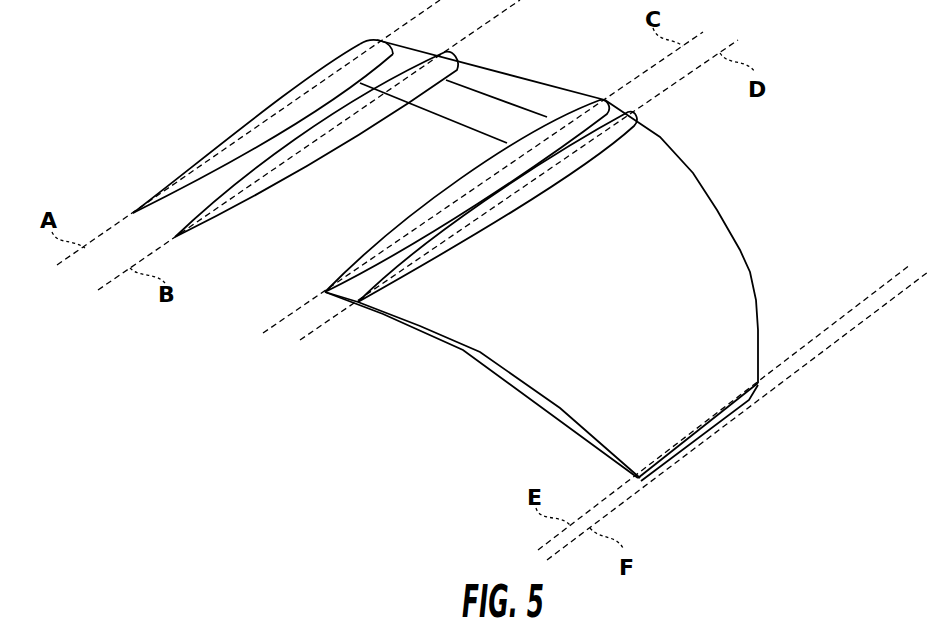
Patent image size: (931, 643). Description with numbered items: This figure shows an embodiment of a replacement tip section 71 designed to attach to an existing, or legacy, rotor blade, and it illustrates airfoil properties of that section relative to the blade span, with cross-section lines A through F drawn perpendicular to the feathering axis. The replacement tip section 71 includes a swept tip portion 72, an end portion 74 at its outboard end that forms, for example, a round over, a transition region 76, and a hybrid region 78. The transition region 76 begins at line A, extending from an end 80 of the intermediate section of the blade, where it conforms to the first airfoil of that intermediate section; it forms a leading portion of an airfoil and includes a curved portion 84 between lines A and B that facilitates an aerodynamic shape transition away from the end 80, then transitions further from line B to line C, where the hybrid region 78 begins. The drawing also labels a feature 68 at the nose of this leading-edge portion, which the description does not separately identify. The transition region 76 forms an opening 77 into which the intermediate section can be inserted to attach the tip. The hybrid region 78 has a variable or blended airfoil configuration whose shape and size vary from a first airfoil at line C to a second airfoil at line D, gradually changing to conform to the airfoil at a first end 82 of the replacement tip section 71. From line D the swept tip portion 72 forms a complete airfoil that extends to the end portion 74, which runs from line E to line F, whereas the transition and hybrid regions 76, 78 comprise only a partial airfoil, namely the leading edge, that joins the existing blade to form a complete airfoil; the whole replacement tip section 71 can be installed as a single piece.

The leading edge of first fin 68 is at (375, 42).
The replacement tip section 71 is at (533, 256).
The swept tip portion 72 is at (753, 298).
The end portion 74 is at (729, 417).
The transition region 76 is at (506, 65).
The opening 77 is at (460, 110).
The hybrid region 78 is at (321, 309).
The end of the intermediate section 80 is at (263, 106).
The first end of the replacement tip section 82 is at (622, 147).
The curved portion 84 is at (417, 42).